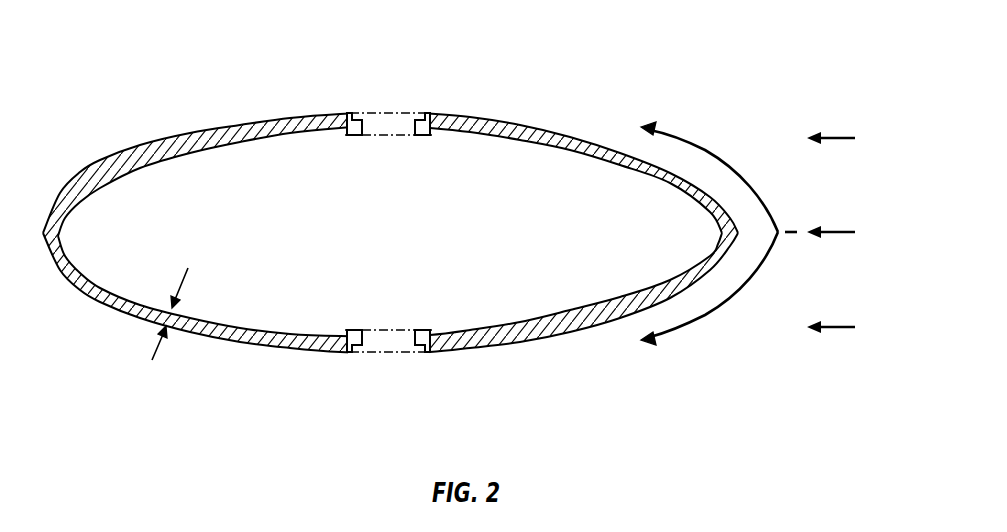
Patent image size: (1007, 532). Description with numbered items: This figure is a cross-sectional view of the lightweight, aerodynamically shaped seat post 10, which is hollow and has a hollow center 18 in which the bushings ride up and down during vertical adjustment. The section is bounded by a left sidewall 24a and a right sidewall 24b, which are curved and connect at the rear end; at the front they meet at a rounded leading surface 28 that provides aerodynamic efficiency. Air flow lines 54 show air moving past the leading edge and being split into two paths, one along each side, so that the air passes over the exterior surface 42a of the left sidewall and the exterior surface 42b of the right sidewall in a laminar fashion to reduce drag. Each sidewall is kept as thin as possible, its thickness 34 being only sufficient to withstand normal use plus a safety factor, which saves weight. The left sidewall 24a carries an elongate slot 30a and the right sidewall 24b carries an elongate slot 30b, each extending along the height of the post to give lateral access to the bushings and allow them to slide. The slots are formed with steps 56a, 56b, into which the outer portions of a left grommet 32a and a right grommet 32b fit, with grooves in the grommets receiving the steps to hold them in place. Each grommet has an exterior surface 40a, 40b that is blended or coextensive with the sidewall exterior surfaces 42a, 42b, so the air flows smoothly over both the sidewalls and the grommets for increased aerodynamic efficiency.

The seat post 10 is at (390, 238).
The hollow center 18 is at (402, 240).
The left sidewall 24a is at (287, 124).
The right sidewall 24b is at (240, 334).
The leading surface 28 is at (735, 222).
The left elongate slot 30a is at (399, 114).
The right elongate slot 30b is at (383, 356).
The left grommet 32a is at (405, 127).
The right grommet 32b is at (398, 346).
The thickness 34 is at (152, 356).
The exterior surface of left grommet 40a is at (386, 113).
The exterior surface of right grommet 40b is at (365, 353).
The exterior surface of left sidewall 42a is at (200, 130).
The exterior surface of right sidewall 42b is at (272, 348).
The air flow lines 54 is at (788, 231).
The left steps 56a is at (352, 116).
The right steps 56b is at (352, 350).